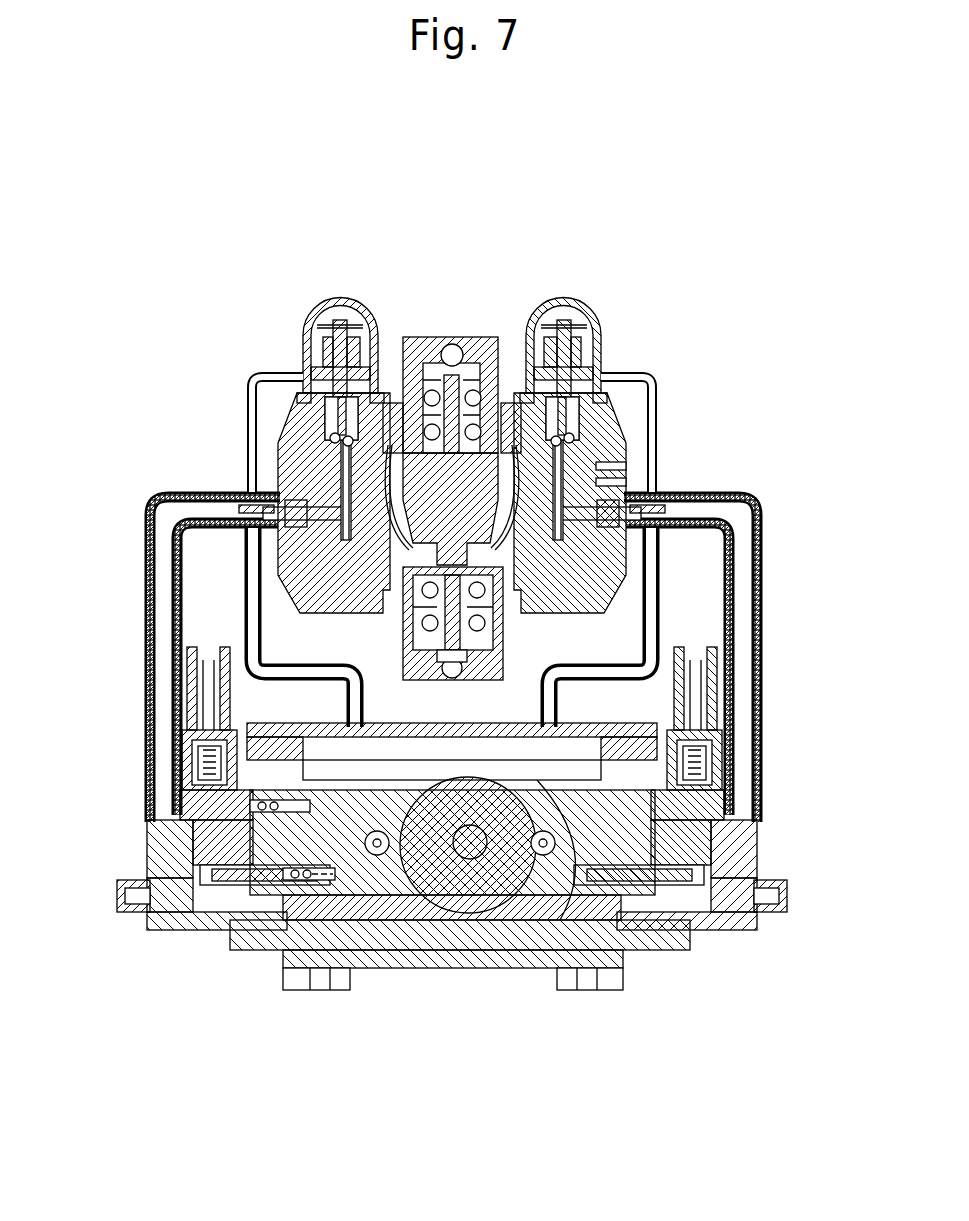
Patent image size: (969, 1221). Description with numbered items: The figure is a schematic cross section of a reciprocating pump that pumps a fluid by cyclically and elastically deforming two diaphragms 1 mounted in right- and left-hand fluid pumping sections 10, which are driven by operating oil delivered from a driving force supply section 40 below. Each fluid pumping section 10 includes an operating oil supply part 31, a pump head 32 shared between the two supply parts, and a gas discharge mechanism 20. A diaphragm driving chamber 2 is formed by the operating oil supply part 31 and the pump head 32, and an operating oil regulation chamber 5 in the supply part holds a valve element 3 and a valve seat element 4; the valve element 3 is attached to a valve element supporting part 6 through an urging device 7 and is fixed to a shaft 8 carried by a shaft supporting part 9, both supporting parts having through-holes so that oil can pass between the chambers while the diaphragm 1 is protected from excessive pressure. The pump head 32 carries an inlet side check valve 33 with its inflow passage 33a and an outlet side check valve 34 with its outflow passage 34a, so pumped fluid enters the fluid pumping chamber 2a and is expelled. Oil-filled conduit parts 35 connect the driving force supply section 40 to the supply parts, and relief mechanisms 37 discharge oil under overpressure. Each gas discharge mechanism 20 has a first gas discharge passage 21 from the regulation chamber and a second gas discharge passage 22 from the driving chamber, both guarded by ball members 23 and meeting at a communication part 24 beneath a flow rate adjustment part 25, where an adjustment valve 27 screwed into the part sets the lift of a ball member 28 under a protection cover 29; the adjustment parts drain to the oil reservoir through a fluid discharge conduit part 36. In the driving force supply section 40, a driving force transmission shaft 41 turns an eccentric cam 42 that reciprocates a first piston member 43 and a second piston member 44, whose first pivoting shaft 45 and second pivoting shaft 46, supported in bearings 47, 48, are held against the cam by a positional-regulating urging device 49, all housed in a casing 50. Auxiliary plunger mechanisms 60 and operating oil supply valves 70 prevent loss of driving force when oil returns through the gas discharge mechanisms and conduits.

The diaphragm 1 is at (679, 454).
The diaphragm driving chamber 2 is at (459, 584).
The fluid pumping chamber 2a is at (397, 697).
The valve element 3 is at (640, 483).
The valve seat element 4 is at (606, 633).
The operating oil regulation chamber 5 is at (640, 470).
The valve element supporting part 6 is at (780, 530).
The urging device 7 is at (120, 564).
The shaft 8 is at (780, 497).
The shaft supporting part 9 is at (587, 632).
The fluid pumping section 10 is at (442, 333).
The gas discharge mechanism 20 is at (439, 325).
The first gas discharge passage 21 is at (702, 420).
The second gas discharge passage 22 is at (377, 400).
The ball member 23 is at (177, 411).
The communication part 24 is at (215, 393).
The flow rate adjustment part 25 is at (352, 340).
The adjustment valve 27 is at (567, 323).
The ball member 28 is at (439, 354).
The protection cover 29 is at (595, 203).
The operating oil supply part 31 is at (802, 584).
The pump head 32 is at (458, 332).
The inlet side check valve 33 is at (466, 647).
The inflow passage 33a is at (498, 705).
The outlet side check valve 34 is at (450, 332).
The outflow passage 34a is at (465, 239).
The conduit part 35 is at (80, 598).
The fluid discharge conduit part 36 is at (100, 540).
The relief mechanism 37 is at (94, 670).
The driving force supply section 40 is at (453, 931).
The driving force transmission shaft 41 is at (457, 860).
The eccentric cam 42 is at (403, 948).
The first piston member 43 is at (190, 972).
The second piston member 44 is at (547, 905).
The first pivoting shaft 45 is at (377, 850).
The second pivoting shaft 46 is at (543, 850).
The bearing 47 is at (357, 962).
The bearing 48 is at (587, 890).
The positional-regulating urging device 49 is at (292, 890).
The casing 50 is at (430, 962).
The auxiliary plunger mechanism 60 is at (808, 833).
The operating oil supply valve 70 is at (68, 900).